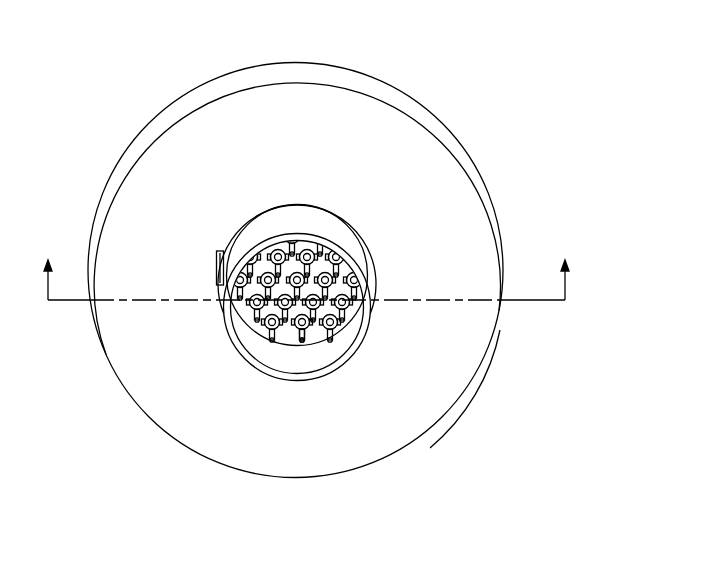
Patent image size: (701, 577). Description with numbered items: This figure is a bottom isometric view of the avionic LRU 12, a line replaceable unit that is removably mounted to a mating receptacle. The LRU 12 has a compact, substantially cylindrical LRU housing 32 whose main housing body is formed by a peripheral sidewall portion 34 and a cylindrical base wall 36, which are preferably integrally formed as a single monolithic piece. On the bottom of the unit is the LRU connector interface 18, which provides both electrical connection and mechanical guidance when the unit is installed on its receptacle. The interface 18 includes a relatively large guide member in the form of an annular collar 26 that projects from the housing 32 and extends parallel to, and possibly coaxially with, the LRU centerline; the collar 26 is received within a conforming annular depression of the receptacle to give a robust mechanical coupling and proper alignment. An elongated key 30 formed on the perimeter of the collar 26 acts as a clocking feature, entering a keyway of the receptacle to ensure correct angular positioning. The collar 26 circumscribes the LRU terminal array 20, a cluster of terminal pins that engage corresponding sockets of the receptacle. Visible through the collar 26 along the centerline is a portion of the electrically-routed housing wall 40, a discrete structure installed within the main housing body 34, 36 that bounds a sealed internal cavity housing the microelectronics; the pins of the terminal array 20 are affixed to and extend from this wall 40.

The avionic LRU 12 is at (309, 281).
The LRU connector interface 18 is at (257, 307).
The LRU terminal array 20 is at (304, 347).
The annular collar 26 is at (329, 226).
The elongated key 30 is at (213, 272).
The LRU housing 32 is at (295, 243).
The peripheral sidewall portion 34 is at (441, 113).
The cylindrical base wall 36 is at (466, 393).
The electrically-routed housing wall 40 is at (288, 338).